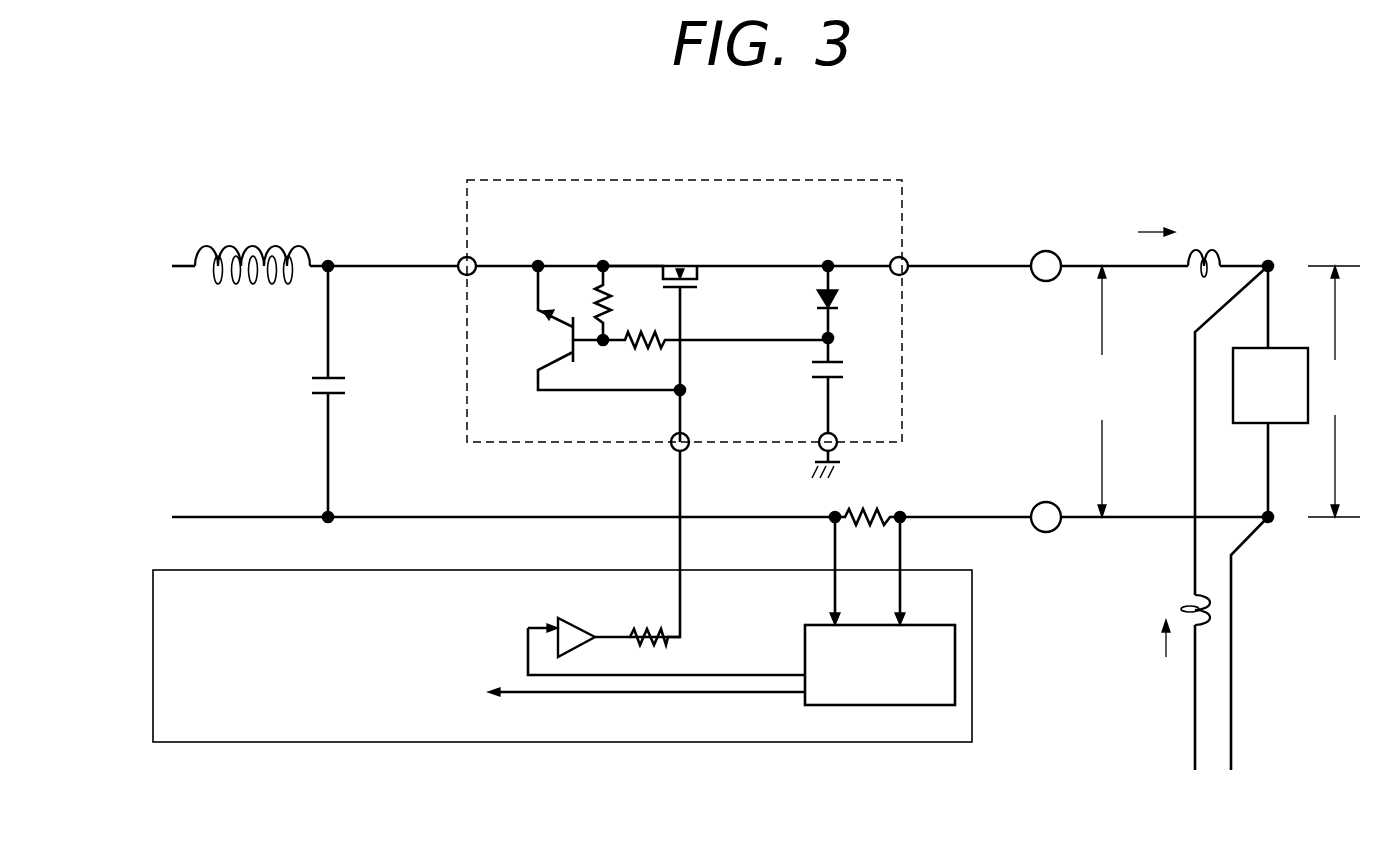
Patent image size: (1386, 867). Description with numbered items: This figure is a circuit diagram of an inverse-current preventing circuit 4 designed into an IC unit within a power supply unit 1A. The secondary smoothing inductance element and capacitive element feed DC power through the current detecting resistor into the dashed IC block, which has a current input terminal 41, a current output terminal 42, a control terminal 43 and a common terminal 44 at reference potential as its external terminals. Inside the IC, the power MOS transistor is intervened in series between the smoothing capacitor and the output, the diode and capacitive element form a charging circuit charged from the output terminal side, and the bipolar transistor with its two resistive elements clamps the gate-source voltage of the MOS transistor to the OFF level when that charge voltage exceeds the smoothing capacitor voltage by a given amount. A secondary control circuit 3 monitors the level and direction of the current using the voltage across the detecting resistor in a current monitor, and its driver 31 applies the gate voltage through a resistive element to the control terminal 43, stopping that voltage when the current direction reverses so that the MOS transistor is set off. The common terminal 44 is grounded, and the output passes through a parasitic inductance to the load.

The power supply unit 1A is at (520, 498).
The secondary control circuit 3 is at (562, 647).
The driver 31 is at (578, 618).
The inverse-current preventing circuit 4 is at (695, 313).
The current input terminal 41 is at (460, 258).
The current output terminal 42 is at (905, 258).
The control terminal 43 is at (668, 448).
The common terminal 44 is at (820, 449).